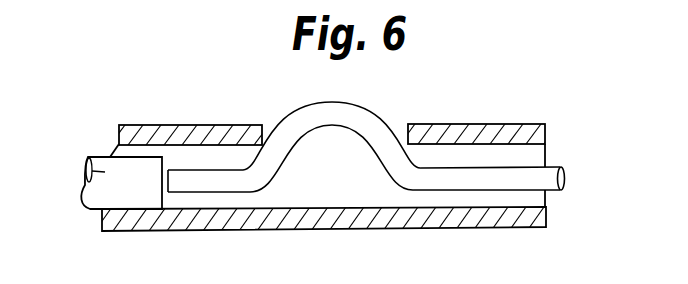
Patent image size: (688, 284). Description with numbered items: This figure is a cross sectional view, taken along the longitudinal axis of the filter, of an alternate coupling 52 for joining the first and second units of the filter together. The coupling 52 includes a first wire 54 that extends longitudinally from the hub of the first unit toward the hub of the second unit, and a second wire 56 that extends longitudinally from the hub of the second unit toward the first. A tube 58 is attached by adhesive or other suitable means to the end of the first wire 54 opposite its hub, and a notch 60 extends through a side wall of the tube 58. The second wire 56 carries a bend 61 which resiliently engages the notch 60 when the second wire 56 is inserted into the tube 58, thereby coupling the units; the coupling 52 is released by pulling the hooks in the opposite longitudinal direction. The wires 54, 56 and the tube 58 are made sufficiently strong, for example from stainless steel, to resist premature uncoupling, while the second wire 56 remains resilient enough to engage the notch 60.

The coupling 52 is at (340, 156).
The first wire 54 is at (88, 170).
The second wire 56 is at (395, 121).
The tube 58 is at (425, 229).
The notch 60 is at (400, 123).
The bend 61 is at (337, 108).